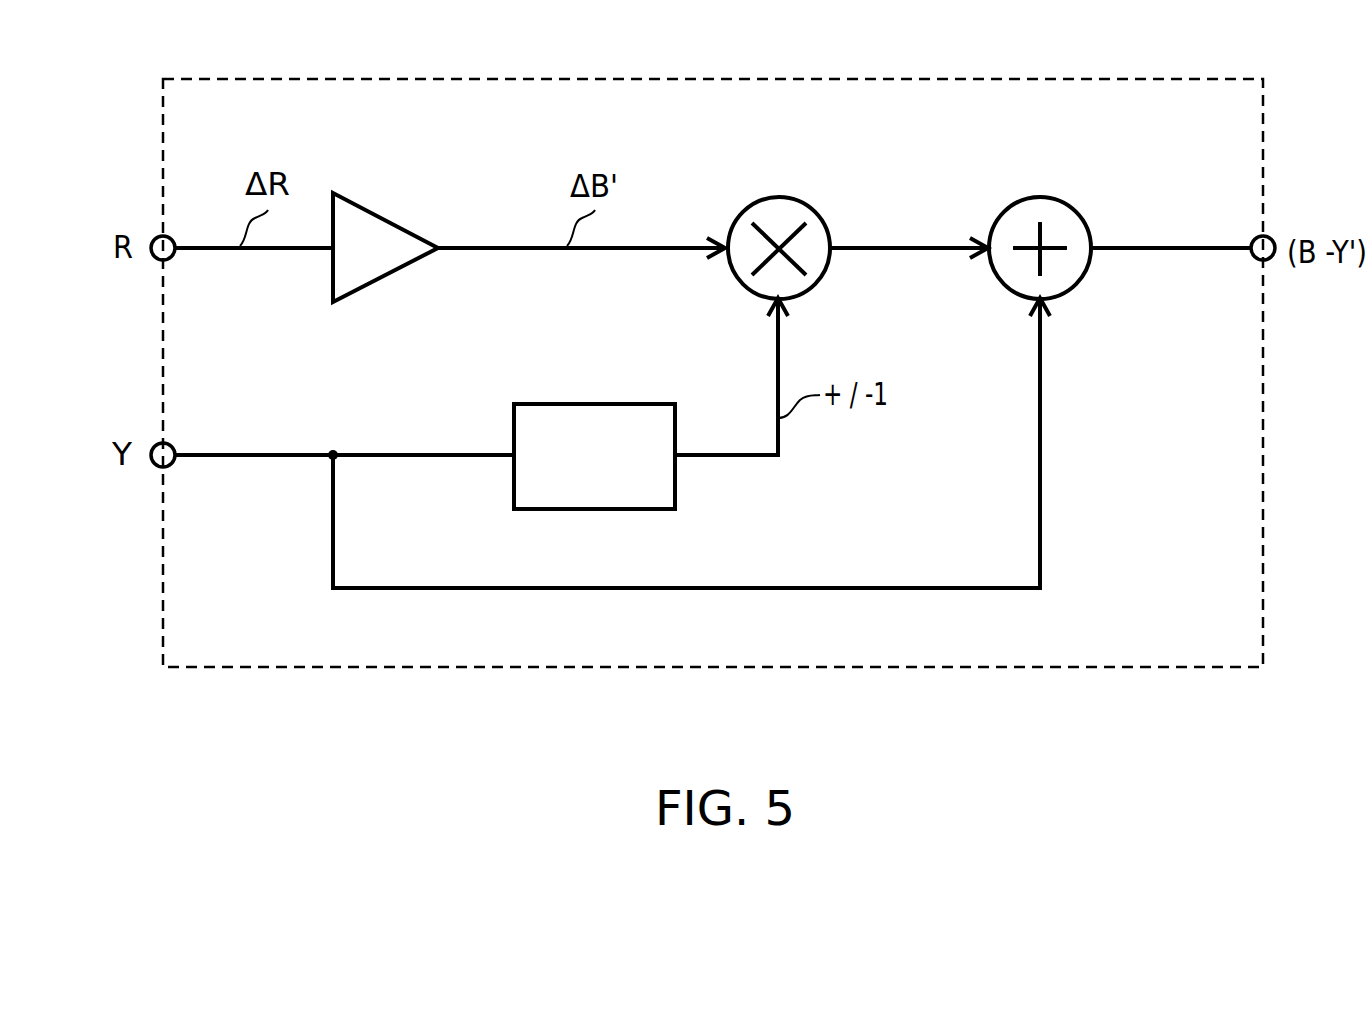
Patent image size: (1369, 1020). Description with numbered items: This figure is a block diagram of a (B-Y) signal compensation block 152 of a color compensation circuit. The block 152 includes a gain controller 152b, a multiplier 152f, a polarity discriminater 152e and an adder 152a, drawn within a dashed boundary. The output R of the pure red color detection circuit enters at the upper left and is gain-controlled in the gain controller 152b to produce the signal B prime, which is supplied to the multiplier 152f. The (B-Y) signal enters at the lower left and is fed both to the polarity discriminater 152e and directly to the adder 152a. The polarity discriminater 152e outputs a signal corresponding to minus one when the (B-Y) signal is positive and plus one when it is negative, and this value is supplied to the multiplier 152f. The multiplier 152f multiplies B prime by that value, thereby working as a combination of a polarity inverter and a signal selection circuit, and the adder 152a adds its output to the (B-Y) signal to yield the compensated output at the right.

The (B-Y) signal compensation block 152 is at (1262, 458).
The adder 152a is at (1077, 210).
The gain controller 152b is at (385, 220).
The polarity discriminater 152e is at (580, 404).
The multiplier 152f is at (813, 210).